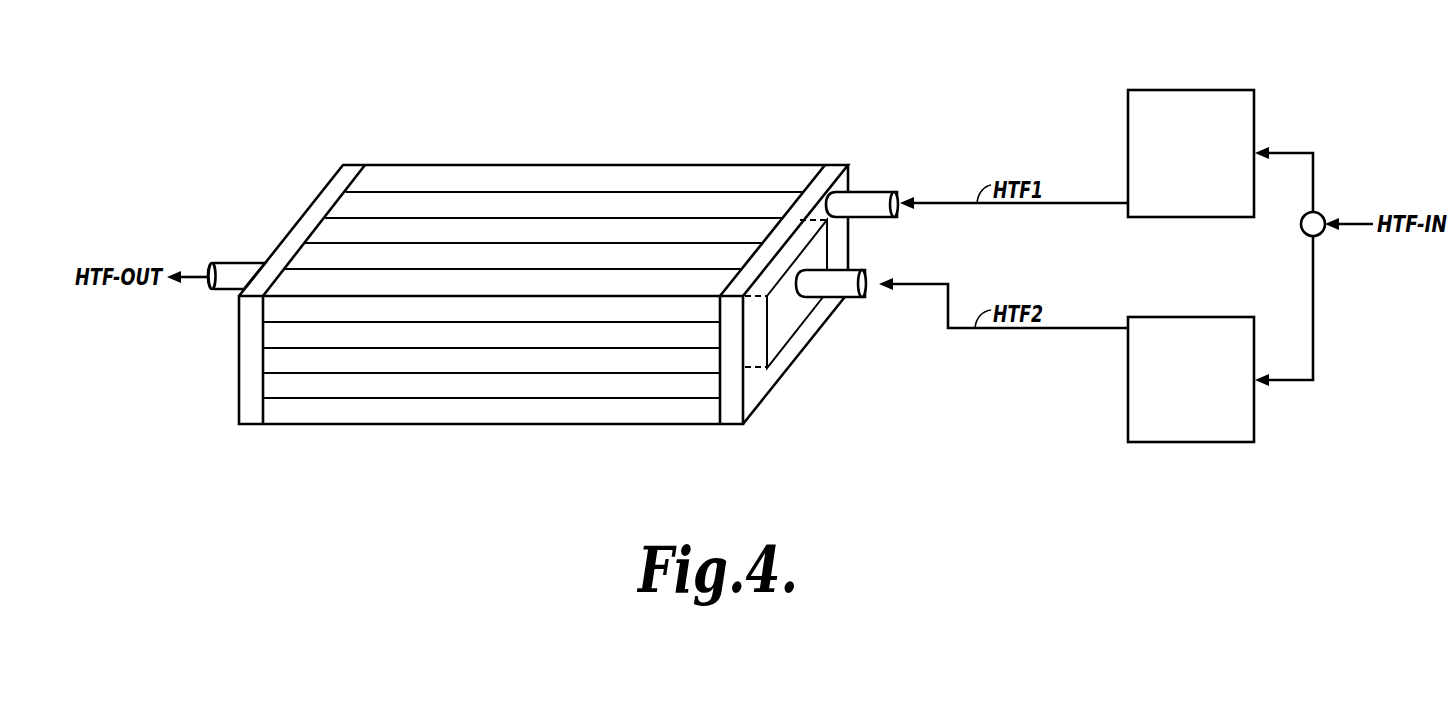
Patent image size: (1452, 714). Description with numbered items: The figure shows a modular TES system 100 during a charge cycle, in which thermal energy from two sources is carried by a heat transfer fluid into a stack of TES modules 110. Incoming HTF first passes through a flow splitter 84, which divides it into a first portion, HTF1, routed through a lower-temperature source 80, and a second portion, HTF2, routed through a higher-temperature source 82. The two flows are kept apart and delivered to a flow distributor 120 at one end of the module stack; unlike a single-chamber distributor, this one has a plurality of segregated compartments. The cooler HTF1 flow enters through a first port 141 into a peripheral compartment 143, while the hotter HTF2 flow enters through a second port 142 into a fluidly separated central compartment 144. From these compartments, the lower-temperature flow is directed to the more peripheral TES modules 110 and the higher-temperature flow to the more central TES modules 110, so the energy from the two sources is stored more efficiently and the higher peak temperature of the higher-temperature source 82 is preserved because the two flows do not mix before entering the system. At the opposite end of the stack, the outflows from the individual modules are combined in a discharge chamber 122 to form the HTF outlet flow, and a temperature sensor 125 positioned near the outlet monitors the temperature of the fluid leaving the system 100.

The modular TES system 100 is at (836, 111).
The TES modules 110 is at (535, 173).
The flow distributor 120 is at (835, 165).
The discharge chamber 122 is at (340, 180).
The temperature sensor 125 is at (240, 265).
The first port 141 is at (874, 190).
The second port 142 is at (860, 272).
The peripheral compartment 143 is at (760, 385).
The central compartment 144 is at (790, 315).
The lower-temperature source 80 is at (1255, 107).
The higher-temperature source 82 is at (1255, 347).
The flow splitter 84 is at (1323, 232).